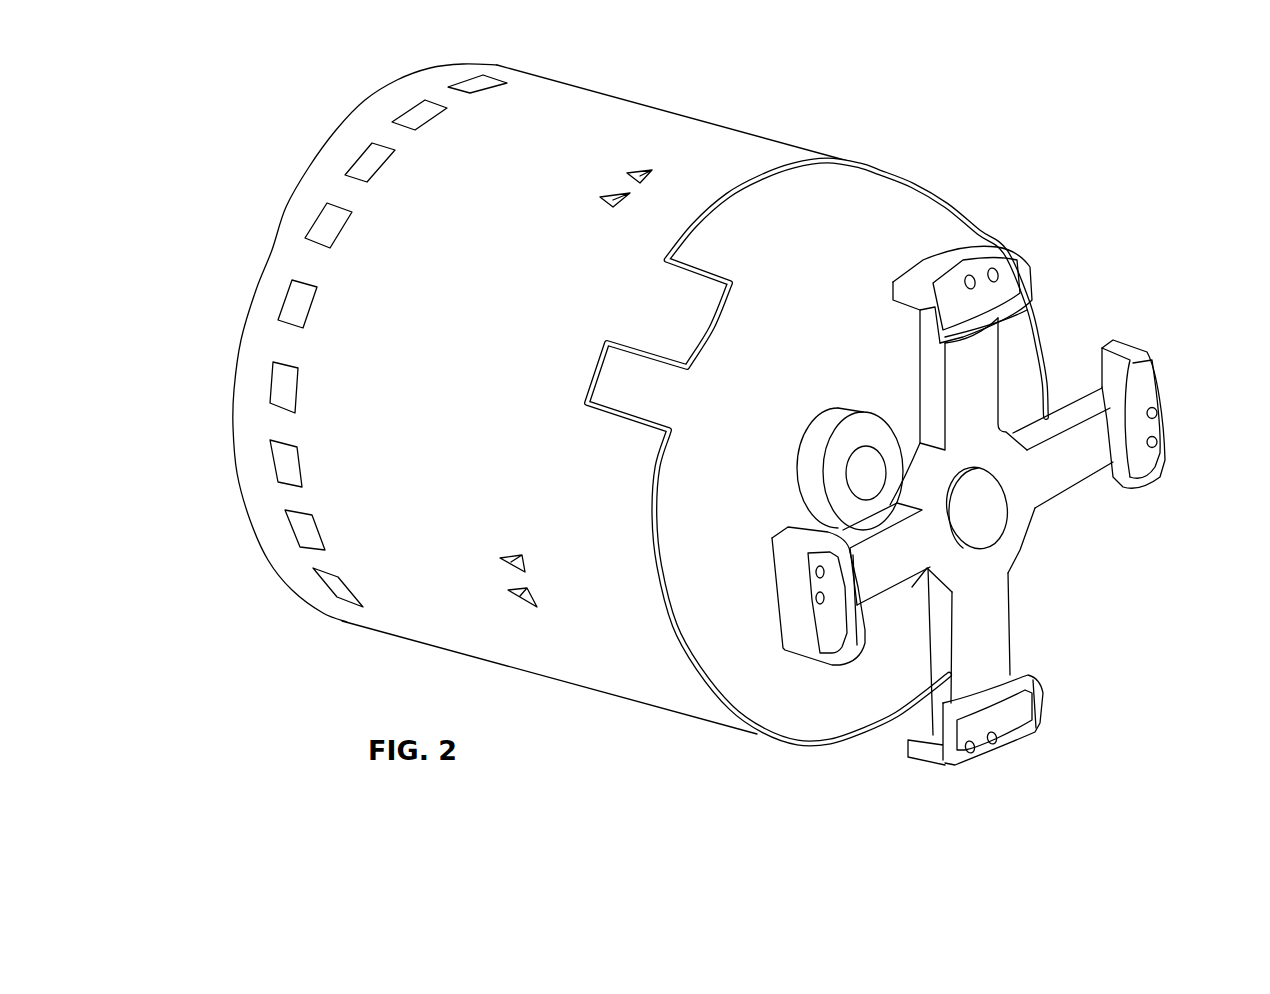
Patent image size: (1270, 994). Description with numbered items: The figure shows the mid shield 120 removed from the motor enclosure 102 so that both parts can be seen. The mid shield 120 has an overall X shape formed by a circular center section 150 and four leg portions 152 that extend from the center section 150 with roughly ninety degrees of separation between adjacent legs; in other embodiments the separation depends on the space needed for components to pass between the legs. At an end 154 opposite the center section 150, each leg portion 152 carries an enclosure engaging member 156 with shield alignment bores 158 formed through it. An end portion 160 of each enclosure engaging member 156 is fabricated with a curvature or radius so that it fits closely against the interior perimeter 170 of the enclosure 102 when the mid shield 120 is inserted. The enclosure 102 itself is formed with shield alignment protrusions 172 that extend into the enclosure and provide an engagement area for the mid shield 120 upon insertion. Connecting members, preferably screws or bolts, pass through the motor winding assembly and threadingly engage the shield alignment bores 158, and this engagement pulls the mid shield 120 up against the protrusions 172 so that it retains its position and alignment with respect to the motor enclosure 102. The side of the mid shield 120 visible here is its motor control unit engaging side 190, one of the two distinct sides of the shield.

The motor enclosure 102 is at (519, 341).
The mid shield 120 is at (939, 555).
The center section 150 is at (1013, 423).
The leg portions 152 is at (980, 345).
The end 154 is at (928, 347).
The enclosure engaging member 156 is at (1012, 262).
The shield alignment bores 158 is at (971, 275).
The end portion 160 is at (923, 273).
The interior perimeter 170 is at (771, 181).
The shield alignment protrusions 172 is at (623, 198).
The motor control unit engaging side 190 is at (1010, 463).